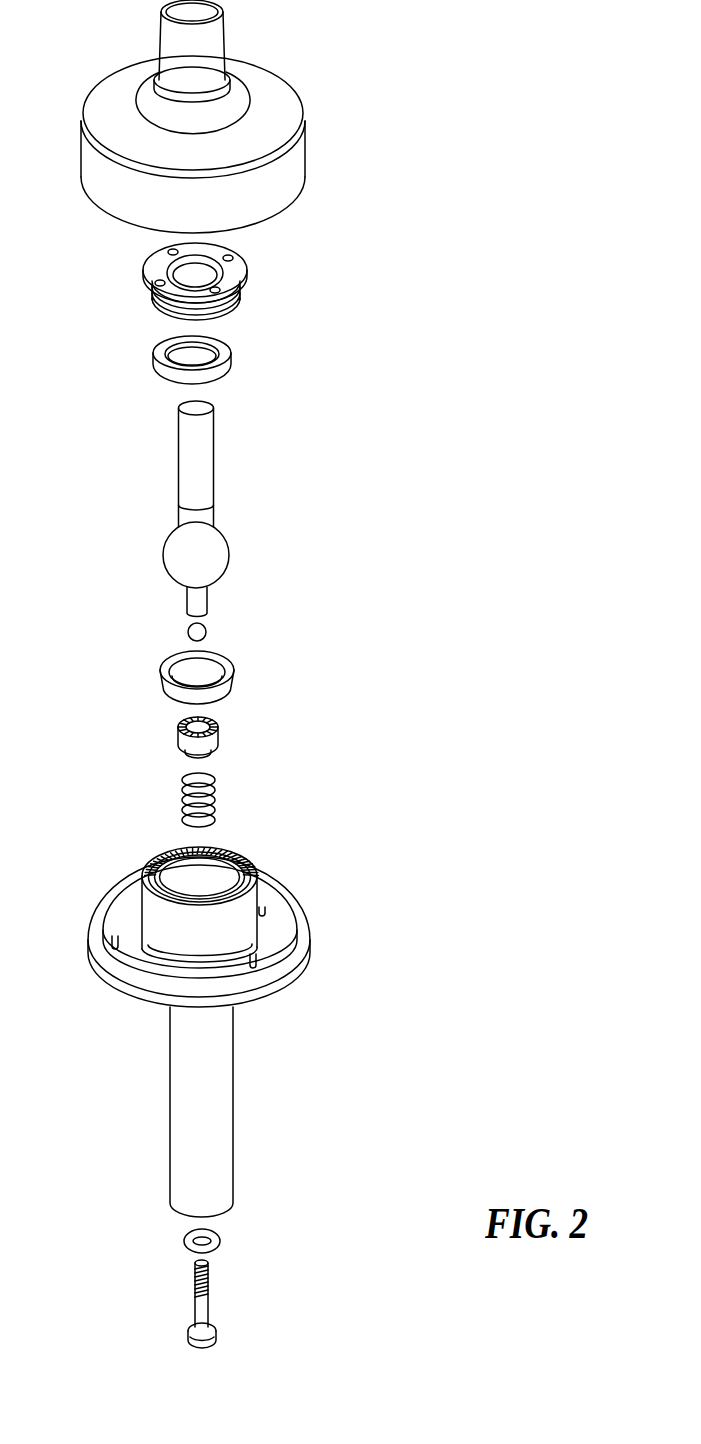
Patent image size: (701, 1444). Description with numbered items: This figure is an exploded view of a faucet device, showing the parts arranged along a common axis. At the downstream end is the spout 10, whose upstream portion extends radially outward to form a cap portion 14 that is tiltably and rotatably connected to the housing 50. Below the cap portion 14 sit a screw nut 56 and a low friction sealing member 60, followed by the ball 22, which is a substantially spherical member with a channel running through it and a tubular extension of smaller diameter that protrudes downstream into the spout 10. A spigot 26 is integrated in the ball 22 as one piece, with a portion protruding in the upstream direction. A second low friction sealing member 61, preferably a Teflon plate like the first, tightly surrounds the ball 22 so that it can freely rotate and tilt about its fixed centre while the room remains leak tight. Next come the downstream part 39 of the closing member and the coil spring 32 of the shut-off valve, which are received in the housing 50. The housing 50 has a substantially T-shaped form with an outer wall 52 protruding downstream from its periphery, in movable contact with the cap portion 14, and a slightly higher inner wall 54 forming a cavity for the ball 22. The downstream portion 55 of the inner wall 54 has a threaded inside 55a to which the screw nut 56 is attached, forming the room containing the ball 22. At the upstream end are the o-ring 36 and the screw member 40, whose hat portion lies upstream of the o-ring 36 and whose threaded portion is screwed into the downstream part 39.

The spout 10 is at (224, 38).
The cap portion 14 is at (108, 78).
The screw nut 56 is at (239, 261).
The low friction sealing member 60 is at (230, 358).
The ball 22 is at (230, 553).
The spigot 26 is at (186, 606).
The low friction sealing member 61 is at (237, 678).
The downstream part 39 is at (219, 735).
The coil spring 32 is at (216, 790).
The inside of the downstream portion of the inner wall 55a is at (226, 858).
The downstream portion of the inner wall 55 is at (239, 890).
The inner wall 54 is at (138, 920).
The outer wall 52 is at (284, 946).
The housing 50 is at (198, 1017).
The o-ring 36 is at (221, 1241).
The screw member 40 is at (212, 1310).